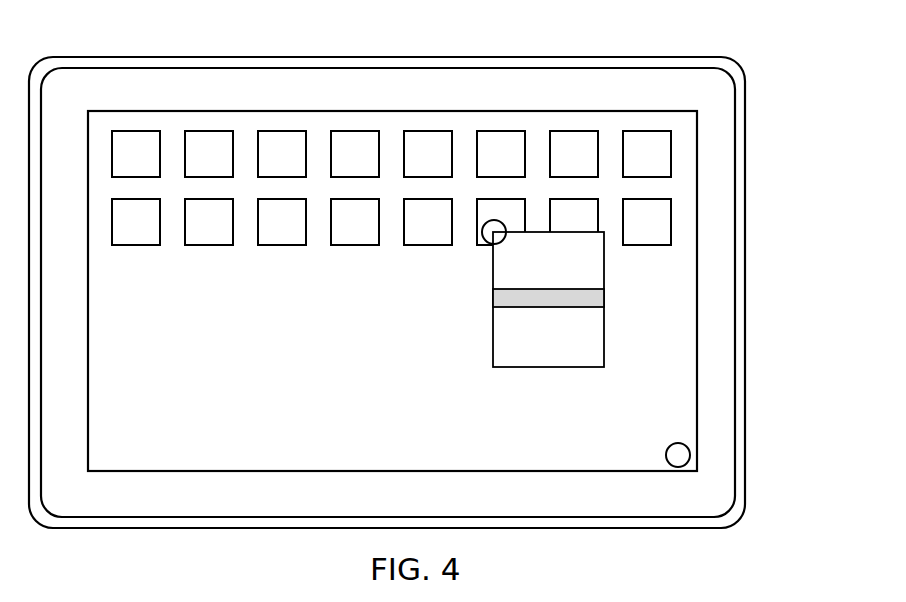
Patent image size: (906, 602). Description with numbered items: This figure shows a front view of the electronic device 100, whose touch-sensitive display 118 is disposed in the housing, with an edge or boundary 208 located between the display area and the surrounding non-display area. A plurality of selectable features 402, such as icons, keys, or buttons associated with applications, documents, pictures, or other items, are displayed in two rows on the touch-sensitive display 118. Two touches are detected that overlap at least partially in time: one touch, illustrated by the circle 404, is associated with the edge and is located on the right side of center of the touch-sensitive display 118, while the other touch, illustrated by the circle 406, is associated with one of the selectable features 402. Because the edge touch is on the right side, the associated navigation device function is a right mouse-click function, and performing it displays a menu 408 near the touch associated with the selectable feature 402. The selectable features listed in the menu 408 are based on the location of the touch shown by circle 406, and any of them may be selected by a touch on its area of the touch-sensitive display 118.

The electronic device 100 is at (703, 560).
The touch-sensitive display 118 is at (736, 177).
The edge or boundary 208 is at (697, 131).
The selectable features 402 is at (571, 131).
The circle illustrating touch location 404 is at (690, 446).
The circle illustrating touch location 406 is at (488, 222).
The menu 408 is at (605, 319).